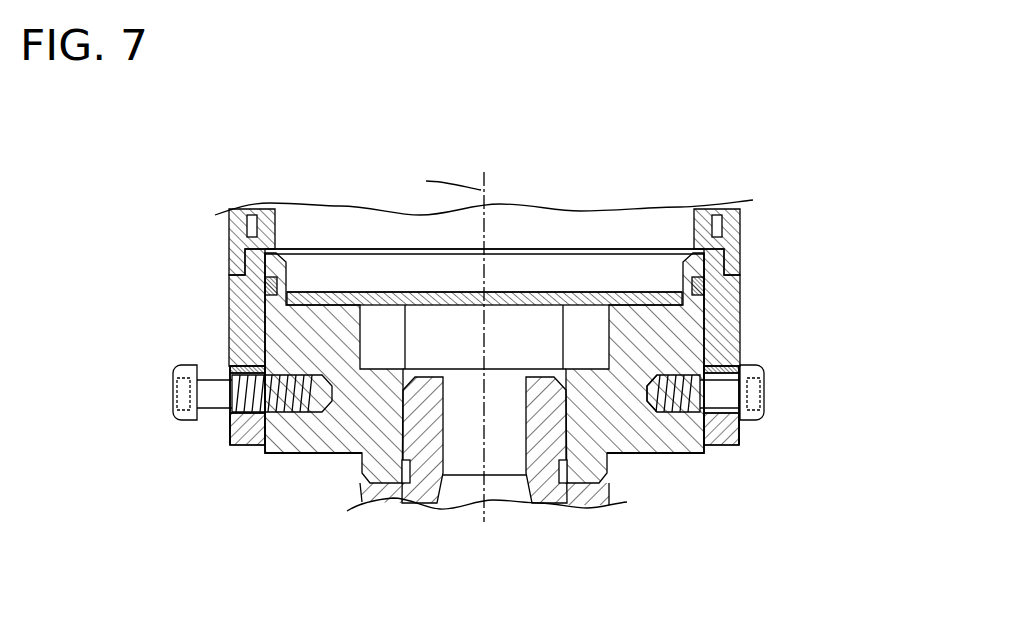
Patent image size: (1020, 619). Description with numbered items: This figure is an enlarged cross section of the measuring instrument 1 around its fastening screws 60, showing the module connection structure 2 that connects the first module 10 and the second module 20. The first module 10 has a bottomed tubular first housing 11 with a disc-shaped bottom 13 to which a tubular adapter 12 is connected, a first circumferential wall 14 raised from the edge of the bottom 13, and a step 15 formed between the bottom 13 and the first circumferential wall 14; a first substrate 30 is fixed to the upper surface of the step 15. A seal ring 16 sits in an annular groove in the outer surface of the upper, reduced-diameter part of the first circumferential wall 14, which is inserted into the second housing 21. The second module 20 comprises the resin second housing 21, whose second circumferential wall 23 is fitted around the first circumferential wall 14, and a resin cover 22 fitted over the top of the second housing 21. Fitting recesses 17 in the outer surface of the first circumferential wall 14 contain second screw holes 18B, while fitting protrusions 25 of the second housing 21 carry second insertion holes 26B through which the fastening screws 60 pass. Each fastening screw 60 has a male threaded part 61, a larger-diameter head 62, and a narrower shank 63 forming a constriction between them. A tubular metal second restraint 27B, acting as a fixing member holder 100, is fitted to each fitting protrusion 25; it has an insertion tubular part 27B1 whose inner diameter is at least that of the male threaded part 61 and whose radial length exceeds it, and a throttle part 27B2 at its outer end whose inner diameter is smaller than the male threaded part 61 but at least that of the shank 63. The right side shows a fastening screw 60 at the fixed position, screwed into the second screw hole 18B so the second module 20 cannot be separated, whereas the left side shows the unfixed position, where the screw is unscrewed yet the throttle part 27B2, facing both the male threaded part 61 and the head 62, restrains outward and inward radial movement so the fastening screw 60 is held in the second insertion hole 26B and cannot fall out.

The measuring instrument 1 is at (200, 200).
The module connection structure 2 is at (130, 422).
The first module 10 is at (217, 510).
The first housing 11 is at (319, 458).
The adapter 12 is at (352, 497).
The bottom 13 is at (613, 437).
The first circumferential wall 14 is at (697, 265).
The step 15 is at (632, 300).
The seal ring 16 is at (704, 288).
The fitting recesses 17 is at (262, 428).
The second screw holes 18B is at (293, 399).
The second module 20 is at (111, 205).
The second housing 21 is at (228, 296).
The cover 22 is at (228, 229).
The second circumferential wall 23 is at (230, 322).
The fitting protrusions 25 is at (230, 436).
The second insertion holes 26B is at (230, 397).
The second restraints 27B is at (233, 350).
The insertion tubular part 27B1 is at (715, 400).
The throttle part 27B2 is at (723, 418).
The first substrate 30 is at (513, 290).
The fastening screws 60 is at (173, 393).
The male threaded part 61 is at (672, 382).
The head 62 is at (762, 370).
The shank 63 is at (688, 402).
The fixing member holders 100 is at (484, 405).